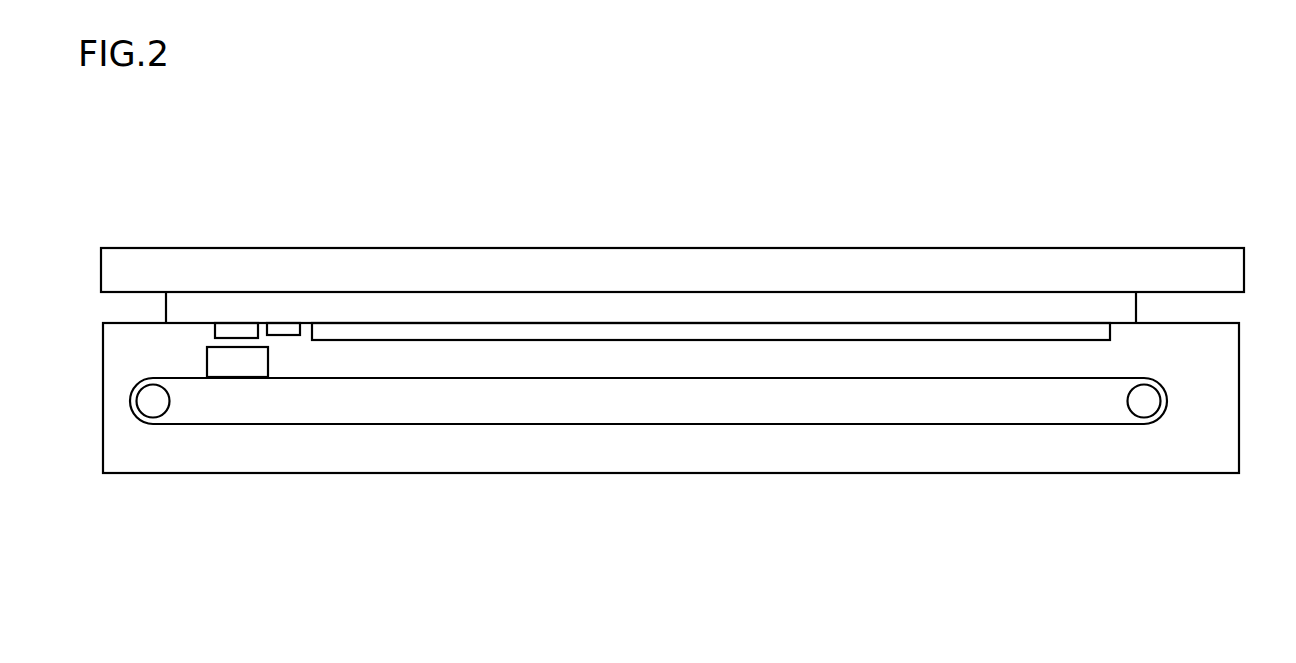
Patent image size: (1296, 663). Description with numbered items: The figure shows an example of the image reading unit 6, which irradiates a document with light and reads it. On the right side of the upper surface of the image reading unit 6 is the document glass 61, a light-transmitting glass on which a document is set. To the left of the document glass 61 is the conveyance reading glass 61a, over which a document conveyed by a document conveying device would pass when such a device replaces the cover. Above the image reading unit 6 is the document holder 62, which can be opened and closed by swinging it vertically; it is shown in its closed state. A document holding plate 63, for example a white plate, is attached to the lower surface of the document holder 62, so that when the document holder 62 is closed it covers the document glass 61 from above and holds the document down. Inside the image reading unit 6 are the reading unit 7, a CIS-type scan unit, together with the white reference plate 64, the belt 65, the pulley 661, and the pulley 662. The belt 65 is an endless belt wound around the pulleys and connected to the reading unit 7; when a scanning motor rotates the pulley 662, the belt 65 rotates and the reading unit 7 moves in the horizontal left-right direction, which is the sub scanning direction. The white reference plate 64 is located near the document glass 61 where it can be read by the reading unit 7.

The image reading unit 6 is at (1250, 243).
The document glass 61 is at (333, 332).
The conveyance reading glass 61a is at (236, 330).
The document holder 62 is at (420, 258).
The document holding plate 63 is at (526, 305).
The white reference plate 64 is at (283, 330).
The belt 65 is at (990, 426).
The pulley 661 is at (1143, 410).
The pulley 662 is at (150, 408).
The reading unit 7 is at (236, 365).